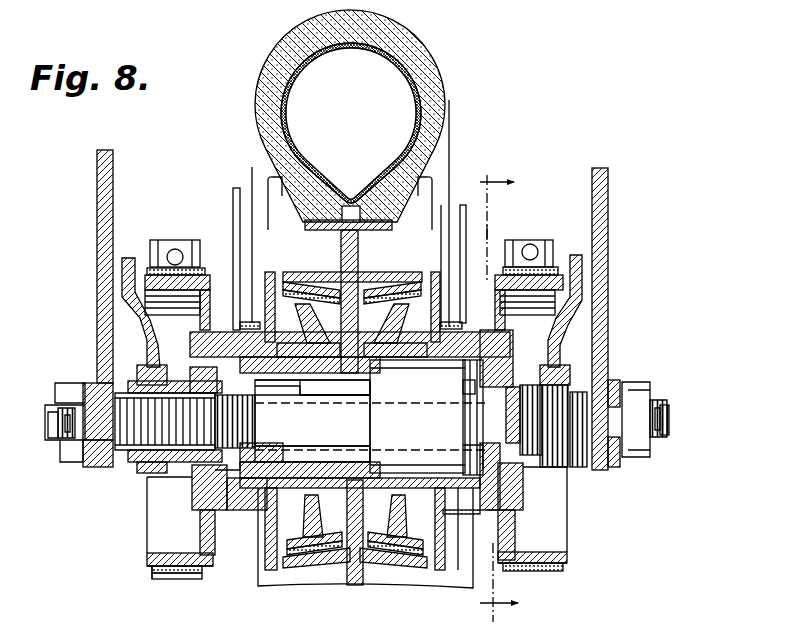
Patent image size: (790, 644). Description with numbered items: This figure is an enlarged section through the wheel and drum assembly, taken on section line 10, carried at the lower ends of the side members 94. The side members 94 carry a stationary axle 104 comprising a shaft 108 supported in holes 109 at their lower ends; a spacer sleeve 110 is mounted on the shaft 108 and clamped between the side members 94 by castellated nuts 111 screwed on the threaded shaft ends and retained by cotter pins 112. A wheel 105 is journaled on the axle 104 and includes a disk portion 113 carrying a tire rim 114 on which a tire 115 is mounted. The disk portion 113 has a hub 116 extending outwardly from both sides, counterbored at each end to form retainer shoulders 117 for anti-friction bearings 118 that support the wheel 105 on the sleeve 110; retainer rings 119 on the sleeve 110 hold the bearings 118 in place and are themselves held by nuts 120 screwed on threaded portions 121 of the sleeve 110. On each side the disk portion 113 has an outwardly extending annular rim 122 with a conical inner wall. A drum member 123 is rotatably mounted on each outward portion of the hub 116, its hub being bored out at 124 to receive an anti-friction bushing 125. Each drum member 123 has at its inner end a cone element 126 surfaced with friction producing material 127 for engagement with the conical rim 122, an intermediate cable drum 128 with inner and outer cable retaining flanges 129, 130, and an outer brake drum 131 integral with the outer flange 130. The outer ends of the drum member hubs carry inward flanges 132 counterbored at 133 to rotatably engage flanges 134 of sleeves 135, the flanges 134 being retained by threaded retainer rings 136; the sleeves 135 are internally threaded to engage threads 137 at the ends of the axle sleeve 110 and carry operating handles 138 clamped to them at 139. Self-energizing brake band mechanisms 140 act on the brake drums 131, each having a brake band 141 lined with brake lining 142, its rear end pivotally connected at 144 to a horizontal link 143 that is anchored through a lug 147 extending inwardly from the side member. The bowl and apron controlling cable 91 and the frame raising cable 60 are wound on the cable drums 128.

The section line 10 is at (509, 392).
The frame raising cable 60 is at (487, 229).
The bowl and apron controlling cable 91 is at (233, 196).
The side members 94 is at (97, 259).
The axle 104 is at (46, 411).
The wheel 105 is at (441, 52).
The shaft 108 is at (668, 415).
The holes 109 is at (90, 385).
The spacer sleeve 110 is at (360, 428).
The nuts 111 is at (70, 392).
The cotter pins 112 is at (48, 429).
The disk portion 113 is at (356, 258).
The tire rim 114 is at (318, 188).
The tire 115 is at (262, 67).
The hub 116 is at (377, 383).
The retainer shoulders 117 is at (317, 388).
The anti-friction bearings 118 is at (290, 403).
The retainer rings 119 is at (270, 401).
The nuts 120 is at (470, 388).
The threaded portions 121 is at (246, 428).
The annular rims 122 is at (292, 272).
The drum member 123 is at (158, 535).
The bore 124 is at (471, 356).
The bushing 125 is at (413, 470).
The cone element 126 is at (326, 563).
The friction producing material 127 is at (300, 565).
The cable drum 128 is at (197, 333).
The inner cable retaining flange 129 is at (438, 567).
The outer cable retaining flange 130 is at (498, 565).
The brake drum 131 is at (147, 563).
The inward flanges 132 is at (457, 462).
The counterbores 133 is at (489, 510).
The flanges 134 is at (193, 473).
The sleeves 135 is at (582, 465).
The threaded retainer rings 136 is at (187, 366).
The threads 137 is at (122, 452).
The operating handles 138 is at (125, 283).
The clamp 139 is at (570, 397).
The brake band mechanisms 140 is at (160, 580).
The brake band 141 is at (182, 578).
The brake lining 142 is at (195, 579).
The horizontal link 143 is at (191, 242).
The pivotal connection 144 is at (150, 254).
The lug 147 is at (140, 233).